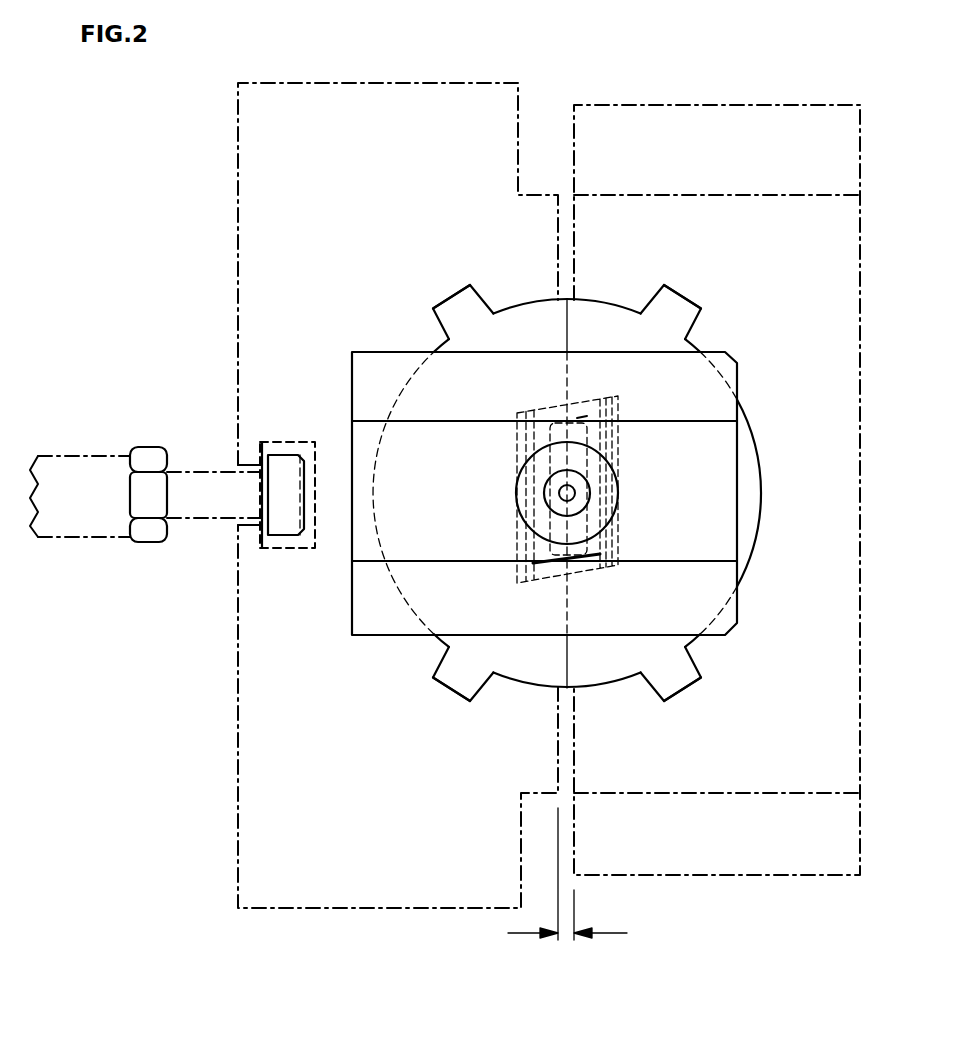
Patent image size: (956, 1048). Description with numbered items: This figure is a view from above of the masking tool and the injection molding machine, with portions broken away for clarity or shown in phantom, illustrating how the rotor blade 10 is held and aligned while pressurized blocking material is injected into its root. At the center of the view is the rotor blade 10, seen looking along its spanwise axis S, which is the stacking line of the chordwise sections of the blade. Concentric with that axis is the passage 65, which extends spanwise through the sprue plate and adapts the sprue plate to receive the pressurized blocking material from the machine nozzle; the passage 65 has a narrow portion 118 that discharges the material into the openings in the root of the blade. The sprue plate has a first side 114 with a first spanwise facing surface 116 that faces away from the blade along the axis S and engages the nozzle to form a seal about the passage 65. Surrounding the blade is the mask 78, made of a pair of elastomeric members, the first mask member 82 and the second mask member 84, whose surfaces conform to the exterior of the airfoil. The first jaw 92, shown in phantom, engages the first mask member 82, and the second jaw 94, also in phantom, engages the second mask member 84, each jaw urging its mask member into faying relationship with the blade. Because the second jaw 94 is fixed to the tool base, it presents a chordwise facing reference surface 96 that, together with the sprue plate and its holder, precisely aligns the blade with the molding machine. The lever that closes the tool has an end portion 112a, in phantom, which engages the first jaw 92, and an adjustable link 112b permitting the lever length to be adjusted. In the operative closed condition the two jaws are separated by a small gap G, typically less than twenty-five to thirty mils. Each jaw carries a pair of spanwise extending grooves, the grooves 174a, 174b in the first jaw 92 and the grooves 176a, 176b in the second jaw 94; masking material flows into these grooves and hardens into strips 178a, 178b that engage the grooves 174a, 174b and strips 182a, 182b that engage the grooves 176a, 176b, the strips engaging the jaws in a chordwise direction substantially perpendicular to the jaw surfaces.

The rotor blade 10 is at (578, 405).
The spanwise axis S is at (572, 491).
The passage 65 is at (562, 496).
The narrow portion 118 is at (582, 512).
The first spanwise facing surface 116 is at (668, 609).
The first side 114 is at (707, 583).
The mask 78 is at (410, 518).
The first mask member 82 is at (537, 662).
The second mask member 84 is at (742, 517).
The reference surface 96 is at (749, 477).
The first jaw 92 is at (325, 842).
The second jaw 94 is at (826, 783).
The gap G is at (579, 877).
The end portion 112a is at (196, 510).
The adjustable link 112b is at (145, 453).
The groove 174a is at (437, 660).
The groove 174b is at (480, 300).
The groove 176a is at (697, 662).
The groove 176b is at (655, 297).
The strip 178a is at (460, 682).
The strip 178b is at (446, 305).
The strip 182a is at (677, 678).
The strip 182b is at (694, 304).